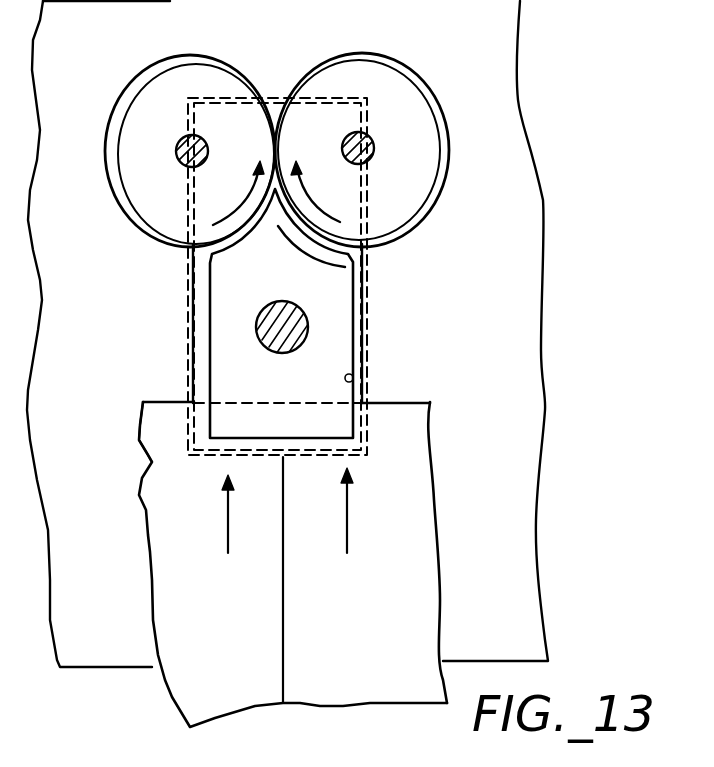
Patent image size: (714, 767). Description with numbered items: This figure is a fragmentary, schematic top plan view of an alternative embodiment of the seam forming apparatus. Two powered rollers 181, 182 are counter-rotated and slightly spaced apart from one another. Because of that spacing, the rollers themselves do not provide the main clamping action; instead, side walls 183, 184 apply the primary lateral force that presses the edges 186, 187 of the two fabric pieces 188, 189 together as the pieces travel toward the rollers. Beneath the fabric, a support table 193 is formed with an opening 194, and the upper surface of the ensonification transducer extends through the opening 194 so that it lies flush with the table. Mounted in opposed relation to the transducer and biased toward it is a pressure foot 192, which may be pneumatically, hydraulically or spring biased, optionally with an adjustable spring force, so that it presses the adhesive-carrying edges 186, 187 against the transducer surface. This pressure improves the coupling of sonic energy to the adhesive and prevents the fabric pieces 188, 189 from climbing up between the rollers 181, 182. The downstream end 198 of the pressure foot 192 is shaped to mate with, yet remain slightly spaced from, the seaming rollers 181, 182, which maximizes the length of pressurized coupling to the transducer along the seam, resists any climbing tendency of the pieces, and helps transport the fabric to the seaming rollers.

The powered roller 181 is at (418, 115).
The powered roller 182 is at (145, 107).
The side wall 183 is at (437, 193).
The side wall 184 is at (132, 225).
The edge 186 is at (284, 638).
The edge 187 is at (277, 553).
The fabric piece 188 is at (428, 540).
The fabric piece 189 is at (156, 462).
The pressure foot 192 is at (360, 350).
The support table 193 is at (135, 381).
The opening 194 is at (353, 380).
The downstream end 198 is at (345, 267).